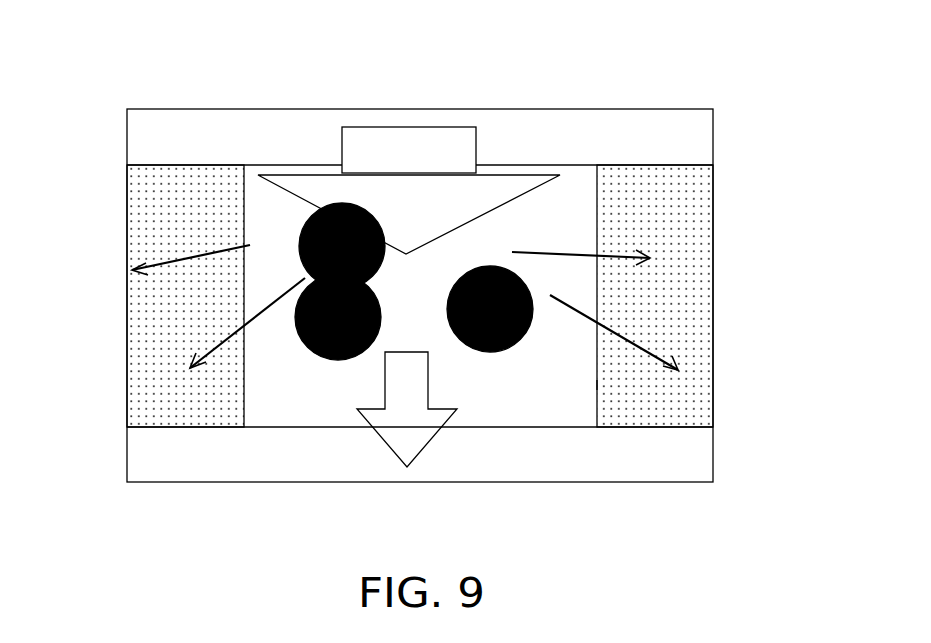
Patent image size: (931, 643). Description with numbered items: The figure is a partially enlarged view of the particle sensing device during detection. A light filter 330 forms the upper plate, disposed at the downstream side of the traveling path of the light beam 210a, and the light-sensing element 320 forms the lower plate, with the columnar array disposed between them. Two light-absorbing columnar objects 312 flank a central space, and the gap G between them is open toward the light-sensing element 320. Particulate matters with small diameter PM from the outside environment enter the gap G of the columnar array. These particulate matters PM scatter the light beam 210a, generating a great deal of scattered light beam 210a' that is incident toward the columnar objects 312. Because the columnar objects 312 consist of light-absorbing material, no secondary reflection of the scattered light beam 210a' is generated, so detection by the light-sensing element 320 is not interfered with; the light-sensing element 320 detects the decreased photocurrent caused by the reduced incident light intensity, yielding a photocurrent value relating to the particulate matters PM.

The light filter 330 is at (697, 142).
The light-sensing element 320 is at (697, 463).
The columnar objects 312 is at (140, 305).
The light beam 210a is at (410, 151).
The scattered light beam 210a' is at (422, 307).
The particulate matters with small diameter PM is at (305, 222).
The gap G is at (596, 385).